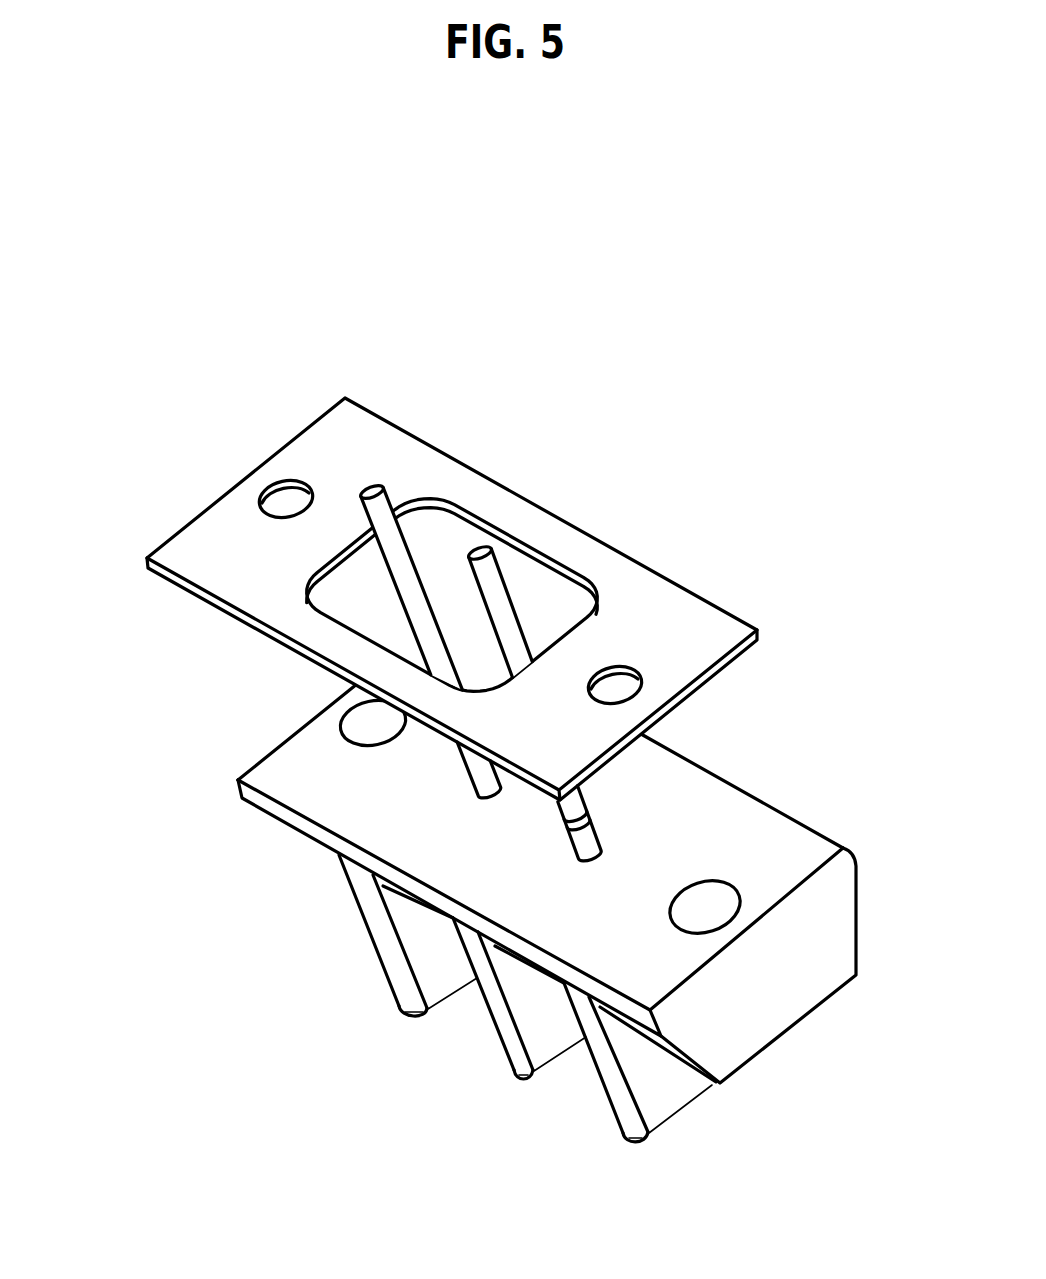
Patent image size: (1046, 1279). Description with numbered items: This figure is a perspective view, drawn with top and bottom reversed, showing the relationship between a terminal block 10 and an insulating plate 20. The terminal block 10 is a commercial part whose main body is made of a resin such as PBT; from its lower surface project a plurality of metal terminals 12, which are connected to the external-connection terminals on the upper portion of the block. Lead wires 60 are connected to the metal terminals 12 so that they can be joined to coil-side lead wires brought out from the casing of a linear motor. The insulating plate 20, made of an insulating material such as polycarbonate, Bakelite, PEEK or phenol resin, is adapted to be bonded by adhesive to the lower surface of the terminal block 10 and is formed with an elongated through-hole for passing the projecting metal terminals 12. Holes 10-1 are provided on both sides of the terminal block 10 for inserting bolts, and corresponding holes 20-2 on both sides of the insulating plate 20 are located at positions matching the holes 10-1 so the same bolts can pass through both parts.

The terminal block 10 is at (542, 913).
The holes 10-1 is at (362, 723).
The metal terminals 12 is at (495, 614).
The insulating plate 20 is at (407, 599).
The holes 20-2 is at (262, 489).
The lead wires 60 is at (386, 491).